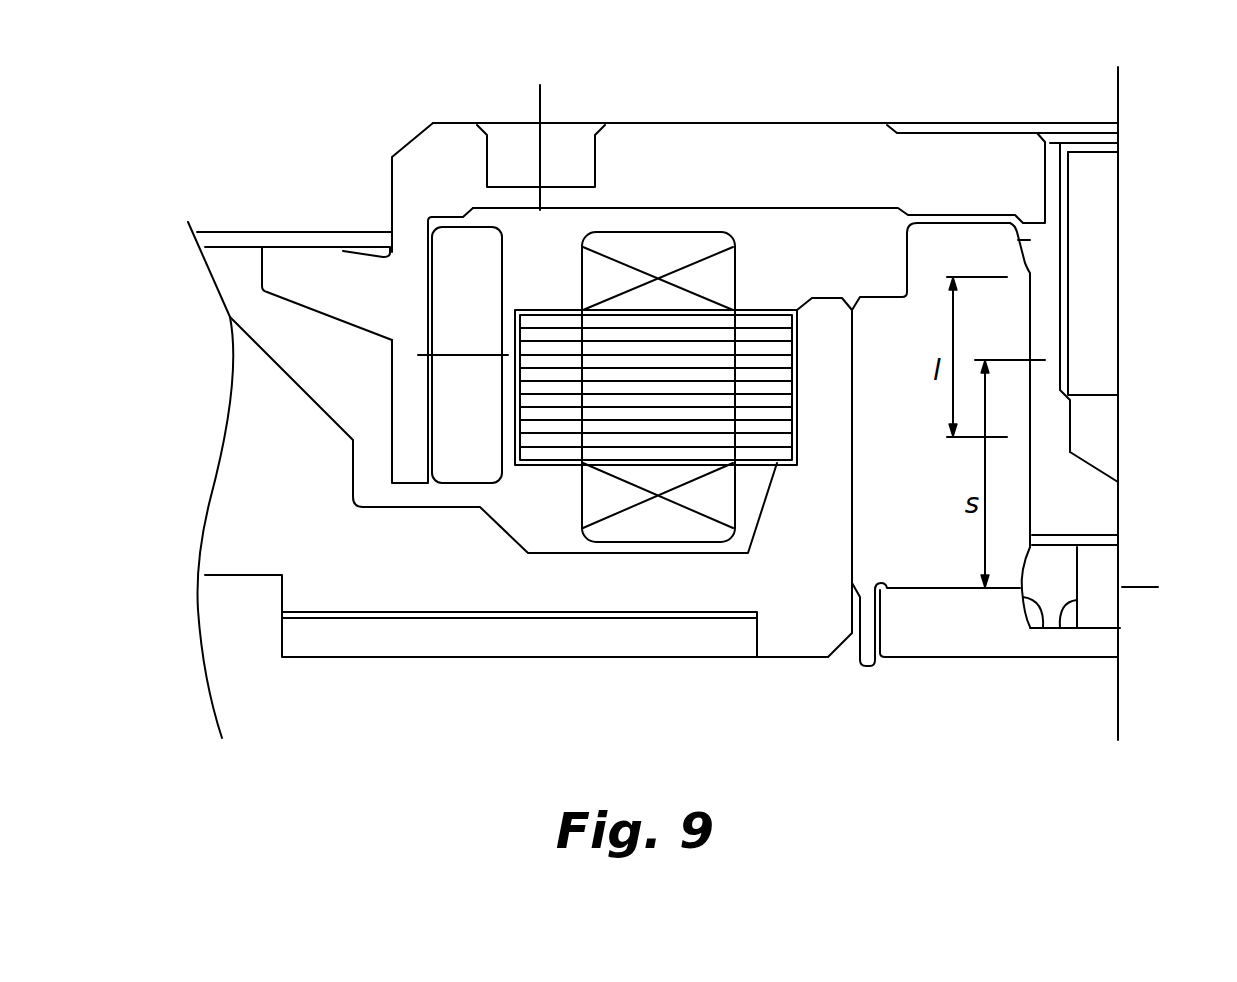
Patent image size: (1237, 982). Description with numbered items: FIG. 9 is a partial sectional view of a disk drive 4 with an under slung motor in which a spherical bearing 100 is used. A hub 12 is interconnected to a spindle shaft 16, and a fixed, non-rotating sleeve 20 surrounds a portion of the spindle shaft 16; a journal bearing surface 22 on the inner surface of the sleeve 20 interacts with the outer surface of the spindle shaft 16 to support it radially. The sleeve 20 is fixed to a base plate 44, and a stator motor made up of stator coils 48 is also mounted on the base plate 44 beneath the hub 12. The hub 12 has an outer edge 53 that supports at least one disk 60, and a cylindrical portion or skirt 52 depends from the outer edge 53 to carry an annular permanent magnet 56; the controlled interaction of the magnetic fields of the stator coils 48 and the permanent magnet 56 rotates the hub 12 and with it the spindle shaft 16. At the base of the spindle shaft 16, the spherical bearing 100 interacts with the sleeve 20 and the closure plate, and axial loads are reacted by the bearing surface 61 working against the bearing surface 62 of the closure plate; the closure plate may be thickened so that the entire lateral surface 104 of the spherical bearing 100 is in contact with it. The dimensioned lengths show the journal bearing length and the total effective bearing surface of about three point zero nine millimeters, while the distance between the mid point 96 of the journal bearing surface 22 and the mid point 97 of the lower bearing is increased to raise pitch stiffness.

The solenoid actuator assembly 4 is at (316, 127).
The hub 12 is at (680, 155).
The outer edge 53 is at (392, 192).
The disk 60 is at (332, 233).
The sleeve 20 is at (880, 317).
The journal bearing surface 22 is at (1033, 328).
The mid point of journal bearing 96 is at (1033, 360).
The spindle shaft 16 is at (1090, 500).
The spherical bearing 100 is at (1060, 580).
The bearing surface 61 is at (1077, 603).
The cylindrical portion or skirt 52 is at (317, 287).
The annular permanent magnet 56 is at (455, 463).
The stator coils 48 is at (768, 417).
The base plate 44 is at (613, 592).
The mid point of bearing 97 is at (1020, 590).
The lateral surface of spherical bearing 104 is at (1047, 628).
The bearing surface of closure plate 62 is at (1093, 633).